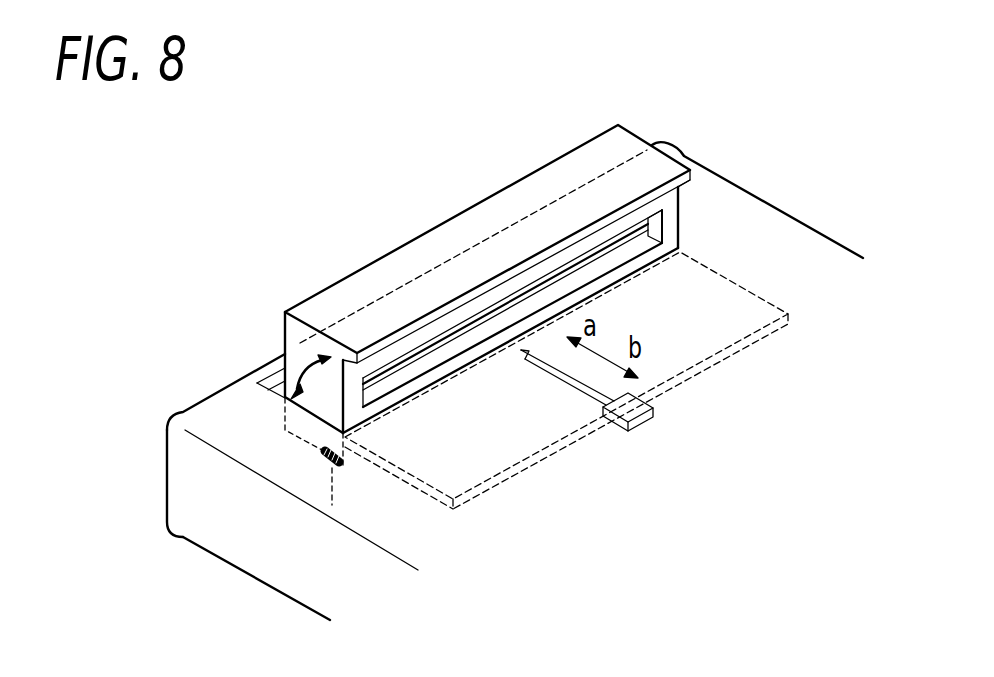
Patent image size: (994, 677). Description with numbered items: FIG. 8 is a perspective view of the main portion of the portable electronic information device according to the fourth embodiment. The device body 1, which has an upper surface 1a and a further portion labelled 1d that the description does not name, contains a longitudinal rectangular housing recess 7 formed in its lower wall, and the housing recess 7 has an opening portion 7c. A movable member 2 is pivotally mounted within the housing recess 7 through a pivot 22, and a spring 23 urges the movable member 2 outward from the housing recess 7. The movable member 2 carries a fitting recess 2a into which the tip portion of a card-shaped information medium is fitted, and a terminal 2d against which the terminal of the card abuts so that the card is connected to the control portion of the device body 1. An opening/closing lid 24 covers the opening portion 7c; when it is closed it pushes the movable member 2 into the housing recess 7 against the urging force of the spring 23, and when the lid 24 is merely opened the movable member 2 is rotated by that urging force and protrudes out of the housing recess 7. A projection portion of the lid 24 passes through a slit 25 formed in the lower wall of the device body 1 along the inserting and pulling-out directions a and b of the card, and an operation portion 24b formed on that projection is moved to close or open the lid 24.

The device body 1 is at (197, 483).
The upper surface 1a is at (230, 568).
The top surface edge of main body 1d is at (203, 418).
The movable member 2 is at (415, 263).
The fitting recess 2a is at (654, 228).
The terminal 2d is at (450, 334).
The housing recess 7 is at (267, 396).
The opening portion 7c is at (258, 383).
The pivot 22 is at (318, 463).
The spring 23 is at (332, 505).
The opening/closing lid 24 is at (713, 343).
The operation portion 24b is at (649, 418).
The slit 25 is at (563, 383).